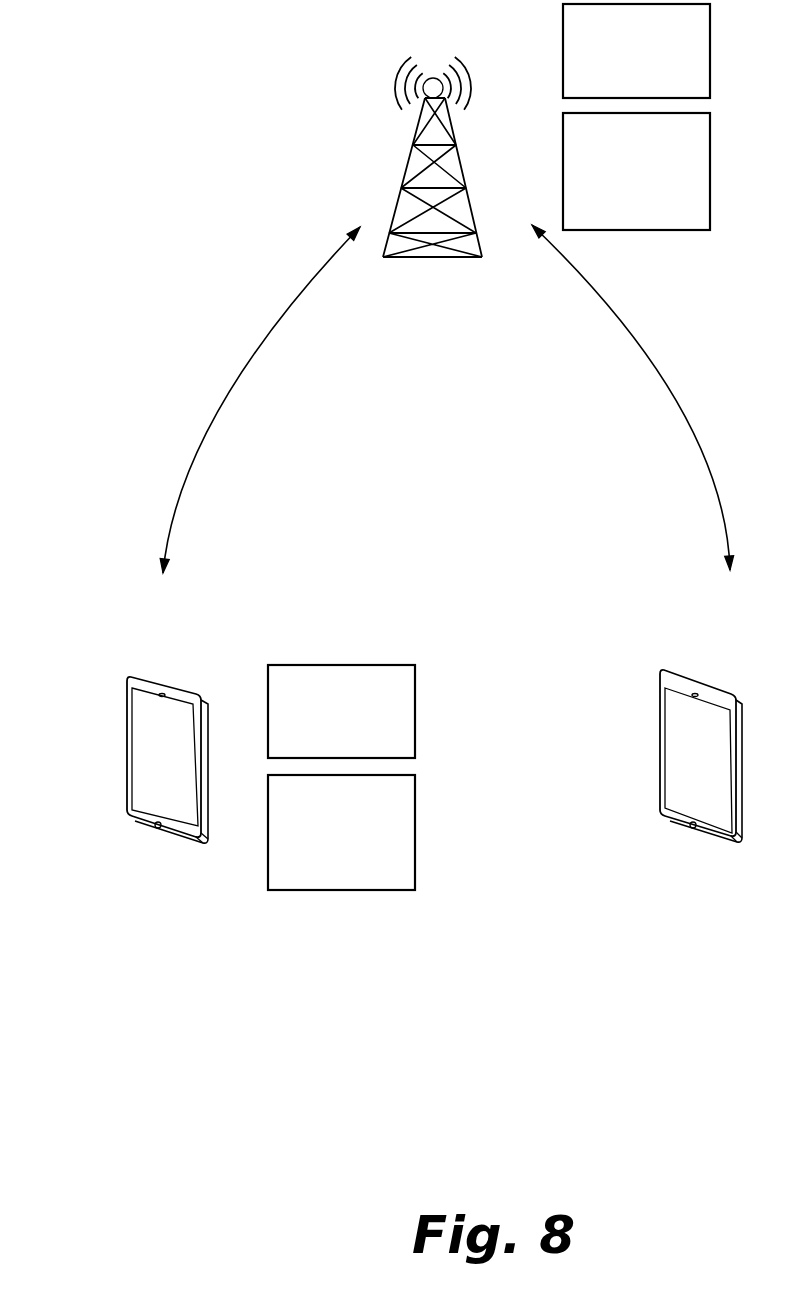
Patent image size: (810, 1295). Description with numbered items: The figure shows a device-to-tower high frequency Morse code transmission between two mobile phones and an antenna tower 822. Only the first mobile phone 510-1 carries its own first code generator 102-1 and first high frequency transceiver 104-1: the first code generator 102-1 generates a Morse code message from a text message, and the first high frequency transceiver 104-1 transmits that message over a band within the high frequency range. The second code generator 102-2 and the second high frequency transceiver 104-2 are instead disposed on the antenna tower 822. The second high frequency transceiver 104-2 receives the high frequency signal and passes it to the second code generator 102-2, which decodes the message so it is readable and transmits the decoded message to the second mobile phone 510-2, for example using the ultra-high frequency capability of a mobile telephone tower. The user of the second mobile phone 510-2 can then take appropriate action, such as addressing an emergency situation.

The antenna tower 822 is at (370, 170).
The second code generator 102-2 is at (463, 167).
The second high frequency transceiver 104-2 is at (467, 180).
The first mobile phone 510-1 is at (182, 672).
The first code generator 102-1 is at (193, 690).
The first high frequency transceiver 104-1 is at (208, 718).
The second mobile phone 510-2 is at (700, 663).